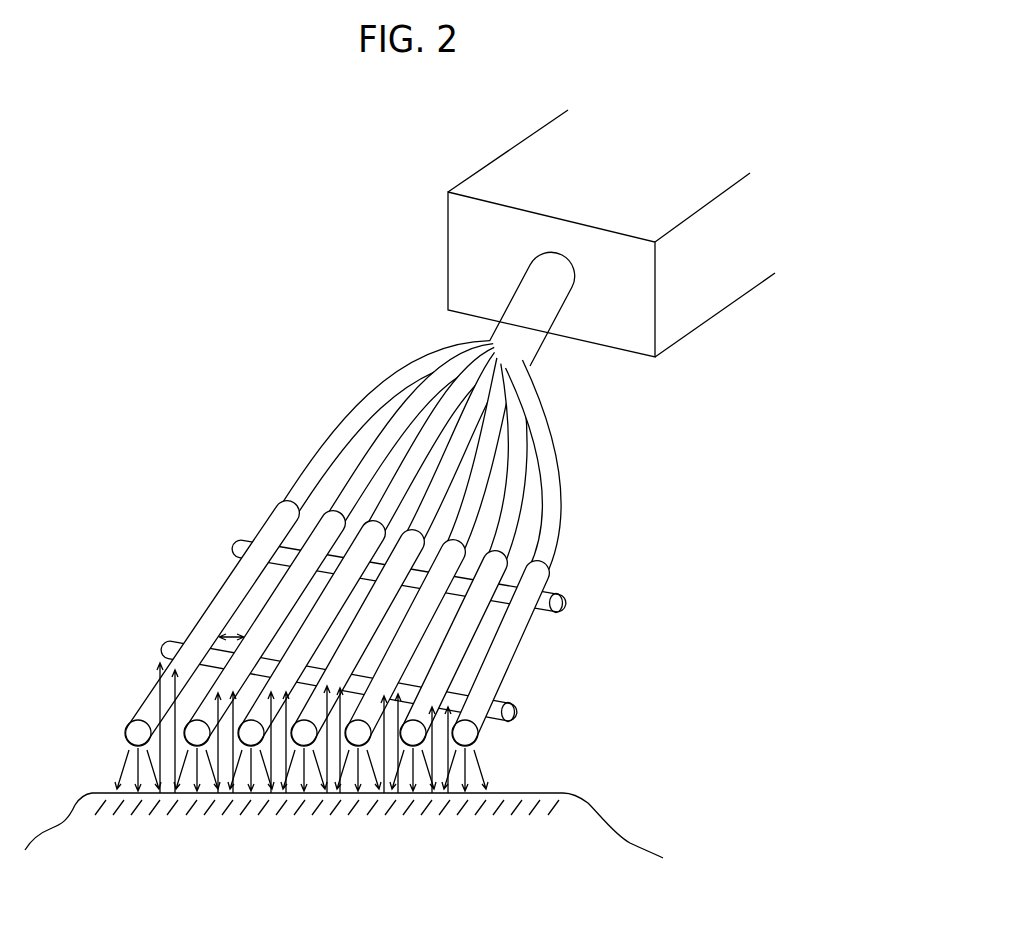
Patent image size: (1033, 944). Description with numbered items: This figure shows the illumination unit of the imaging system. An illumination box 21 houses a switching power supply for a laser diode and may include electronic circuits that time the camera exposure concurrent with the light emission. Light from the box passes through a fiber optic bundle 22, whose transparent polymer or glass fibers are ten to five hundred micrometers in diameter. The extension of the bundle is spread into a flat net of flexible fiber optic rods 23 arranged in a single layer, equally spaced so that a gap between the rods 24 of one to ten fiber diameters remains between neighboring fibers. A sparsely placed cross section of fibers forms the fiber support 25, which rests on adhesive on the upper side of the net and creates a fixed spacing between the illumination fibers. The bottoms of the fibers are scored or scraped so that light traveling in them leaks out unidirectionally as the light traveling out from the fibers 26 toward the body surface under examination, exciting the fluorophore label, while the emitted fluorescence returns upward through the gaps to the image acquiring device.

The illumination box 21 is at (722, 313).
The fiber optic bundle 22 is at (493, 335).
The flexible fiber optic rods 23 is at (510, 662).
The gap between the rods 24 is at (225, 634).
The fiber support 25 is at (563, 602).
The light traveling out from the fibers 26 is at (583, 798).